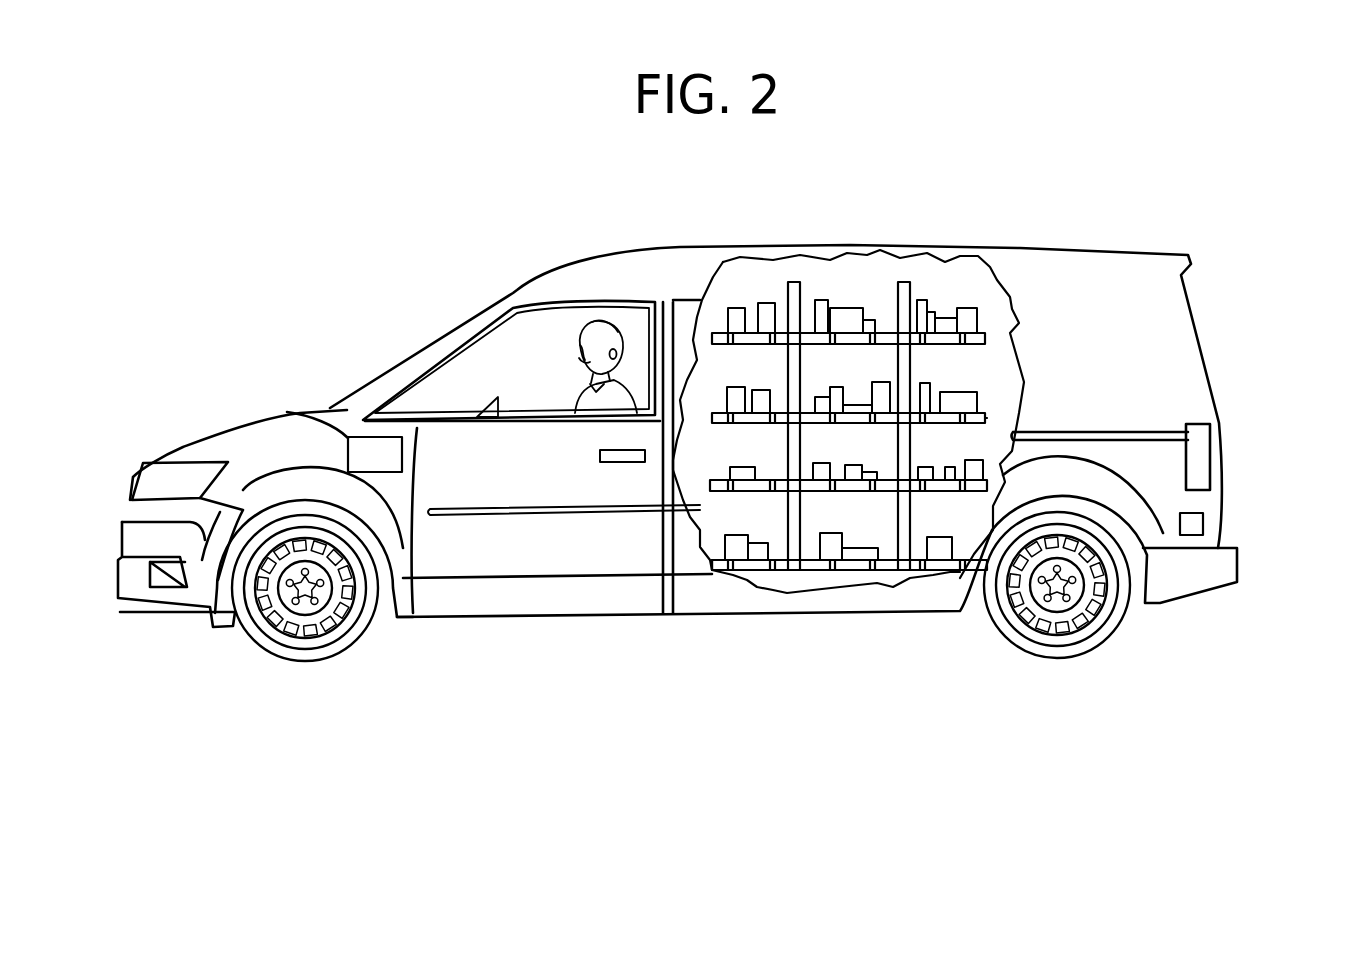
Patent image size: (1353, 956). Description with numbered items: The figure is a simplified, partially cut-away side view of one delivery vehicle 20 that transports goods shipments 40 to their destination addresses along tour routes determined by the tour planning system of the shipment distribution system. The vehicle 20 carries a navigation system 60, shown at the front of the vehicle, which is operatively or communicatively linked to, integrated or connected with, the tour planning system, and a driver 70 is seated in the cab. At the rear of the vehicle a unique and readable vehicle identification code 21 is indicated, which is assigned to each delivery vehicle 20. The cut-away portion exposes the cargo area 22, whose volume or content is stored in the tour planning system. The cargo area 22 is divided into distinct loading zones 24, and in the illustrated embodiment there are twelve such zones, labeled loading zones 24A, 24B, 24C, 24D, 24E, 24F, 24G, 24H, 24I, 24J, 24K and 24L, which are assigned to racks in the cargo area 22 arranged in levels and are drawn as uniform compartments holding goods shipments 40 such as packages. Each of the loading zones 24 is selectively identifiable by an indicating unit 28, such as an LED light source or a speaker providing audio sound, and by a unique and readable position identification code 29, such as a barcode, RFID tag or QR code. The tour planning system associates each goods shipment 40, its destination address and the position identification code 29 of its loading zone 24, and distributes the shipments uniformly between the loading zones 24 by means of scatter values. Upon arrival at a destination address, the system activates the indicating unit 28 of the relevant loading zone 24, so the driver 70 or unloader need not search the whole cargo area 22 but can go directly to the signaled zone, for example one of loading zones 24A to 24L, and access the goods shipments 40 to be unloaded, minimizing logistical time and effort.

The delivery vehicle 20 is at (268, 303).
The vehicle identification code 21 is at (1195, 522).
The cargo area 22 is at (1000, 368).
The loading zones 24 is at (967, 508).
The loading zone 24A is at (731, 293).
The loading zone 24B is at (820, 293).
The loading zone 24C is at (923, 293).
The loading zone 24D is at (731, 377).
The loading zone 24E is at (820, 377).
The loading zone 24F is at (923, 377).
The loading zone 24G is at (731, 460).
The loading zone 24H is at (820, 460).
The loading zone 24I is at (923, 460).
The loading zone 24J is at (731, 530).
The loading zone 24K is at (820, 530).
The loading zone 24L is at (923, 530).
The indicating unit 28 is at (712, 490).
The position identification code 29 is at (985, 419).
The goods shipments 40 is at (868, 314).
The navigation system 60 is at (347, 437).
The driver 70 is at (605, 322).